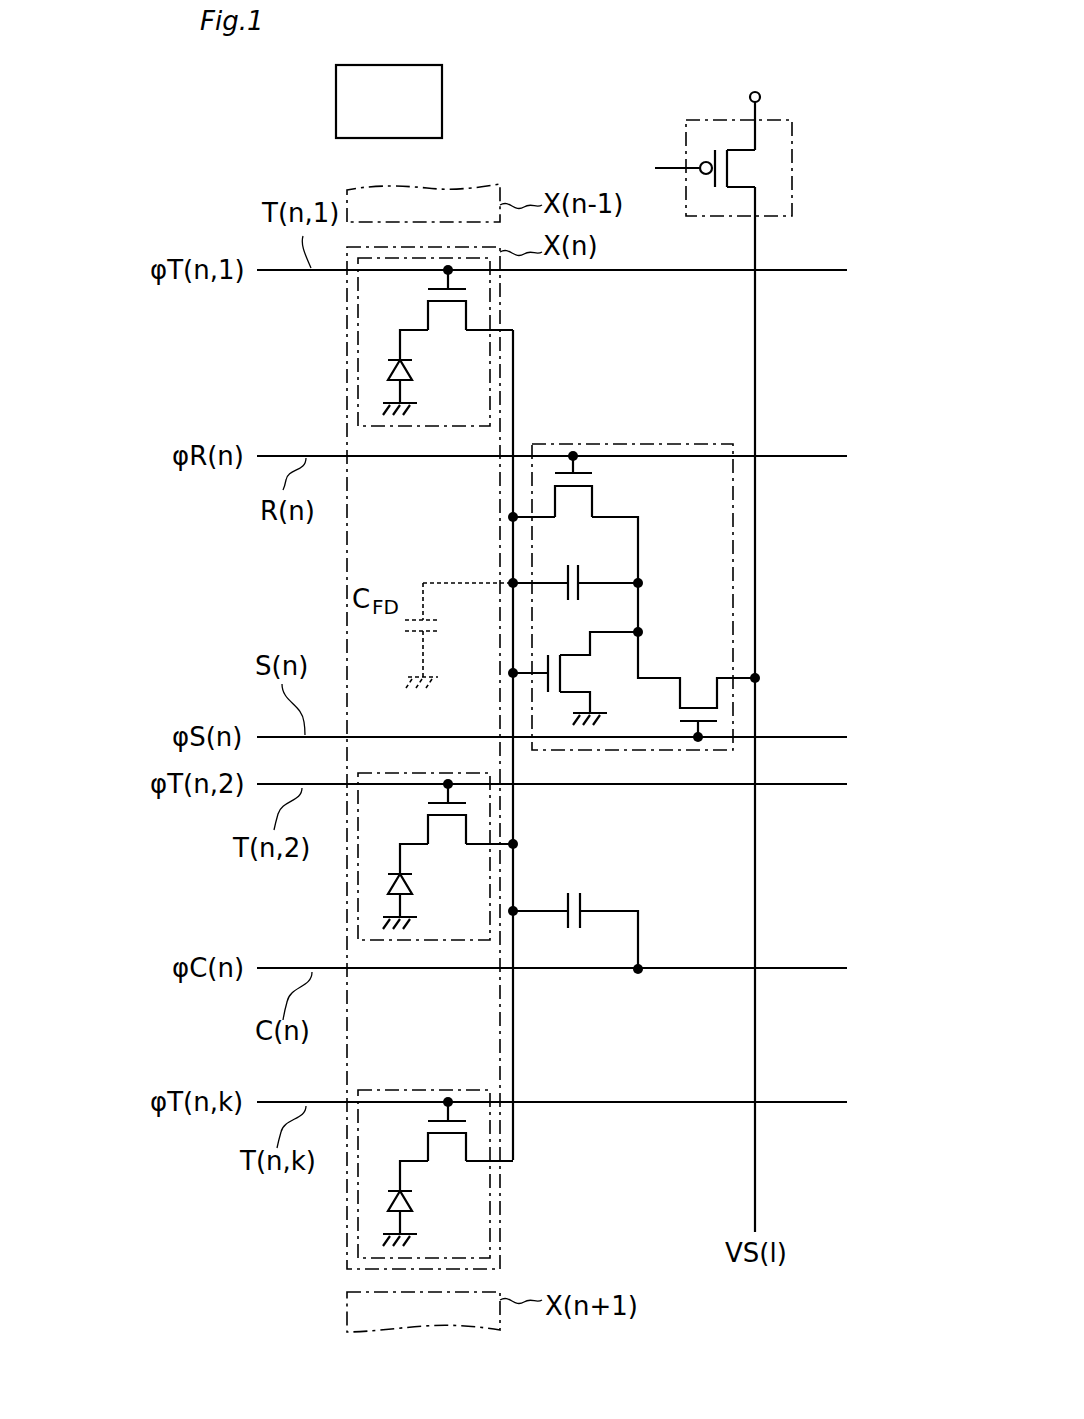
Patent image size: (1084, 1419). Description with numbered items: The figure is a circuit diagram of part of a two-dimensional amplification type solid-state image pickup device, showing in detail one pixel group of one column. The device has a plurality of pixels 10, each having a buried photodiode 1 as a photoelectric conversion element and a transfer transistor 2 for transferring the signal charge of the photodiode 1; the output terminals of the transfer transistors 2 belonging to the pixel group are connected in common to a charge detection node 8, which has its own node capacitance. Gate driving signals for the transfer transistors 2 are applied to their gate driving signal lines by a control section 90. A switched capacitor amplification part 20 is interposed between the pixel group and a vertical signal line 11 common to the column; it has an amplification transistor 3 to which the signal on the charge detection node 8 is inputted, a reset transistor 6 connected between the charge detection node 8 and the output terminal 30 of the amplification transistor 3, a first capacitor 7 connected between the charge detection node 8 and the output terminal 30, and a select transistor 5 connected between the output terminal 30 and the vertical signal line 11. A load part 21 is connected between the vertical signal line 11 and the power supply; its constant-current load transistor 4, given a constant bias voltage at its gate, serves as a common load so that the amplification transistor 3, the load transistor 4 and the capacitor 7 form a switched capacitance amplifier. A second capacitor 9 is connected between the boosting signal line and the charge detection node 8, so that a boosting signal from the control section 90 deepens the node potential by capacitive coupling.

The buried photodiode 1 is at (410, 370).
The transfer transistor 2 is at (448, 303).
The amplification transistor 3 is at (565, 672).
The constant-current load transistor 4 is at (730, 170).
The select transistor 5 is at (703, 708).
The reset transistor 6 is at (572, 488).
The capacitor 7 is at (582, 577).
The charge detection node 8 is at (515, 770).
The capacitor 9 is at (582, 895).
The pixel 10 is at (399, 758).
The vertical signal line 11 is at (757, 537).
The switched capacitor amplification part 20 is at (657, 443).
The load part 21 is at (792, 158).
The output terminal 30 is at (642, 630).
The control section 90 is at (442, 100).